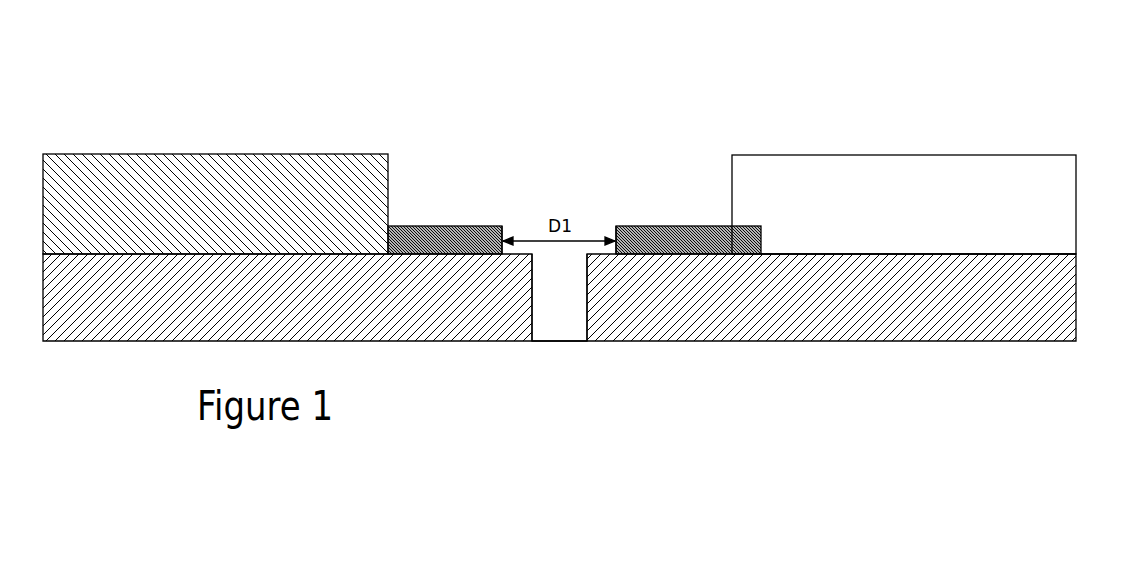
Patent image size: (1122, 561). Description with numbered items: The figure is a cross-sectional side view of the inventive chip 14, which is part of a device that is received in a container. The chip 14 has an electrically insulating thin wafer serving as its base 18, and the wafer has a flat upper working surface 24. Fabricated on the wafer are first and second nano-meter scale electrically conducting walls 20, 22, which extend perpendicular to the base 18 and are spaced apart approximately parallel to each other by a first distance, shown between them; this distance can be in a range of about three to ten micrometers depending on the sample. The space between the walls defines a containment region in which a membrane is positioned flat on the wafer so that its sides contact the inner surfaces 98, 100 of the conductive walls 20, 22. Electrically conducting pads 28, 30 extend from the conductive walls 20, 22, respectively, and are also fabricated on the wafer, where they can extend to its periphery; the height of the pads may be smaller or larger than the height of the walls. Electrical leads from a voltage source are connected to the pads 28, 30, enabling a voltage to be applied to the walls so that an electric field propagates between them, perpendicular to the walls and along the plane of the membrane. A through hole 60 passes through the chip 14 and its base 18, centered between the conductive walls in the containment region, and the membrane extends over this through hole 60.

The chip 14 is at (1013, 107).
The base 18 is at (1048, 298).
The first electrically conducting wall 20 is at (452, 225).
The second electrically conducting wall 22 is at (657, 227).
The working surface 24 is at (857, 258).
The electrically conducting pad 28 is at (270, 213).
The electrically conducting pad 30 is at (960, 183).
The through hole 60 is at (533, 280).
The inner surface of conductive wall 98 is at (507, 229).
The inner surface of conductive wall 100 is at (615, 232).